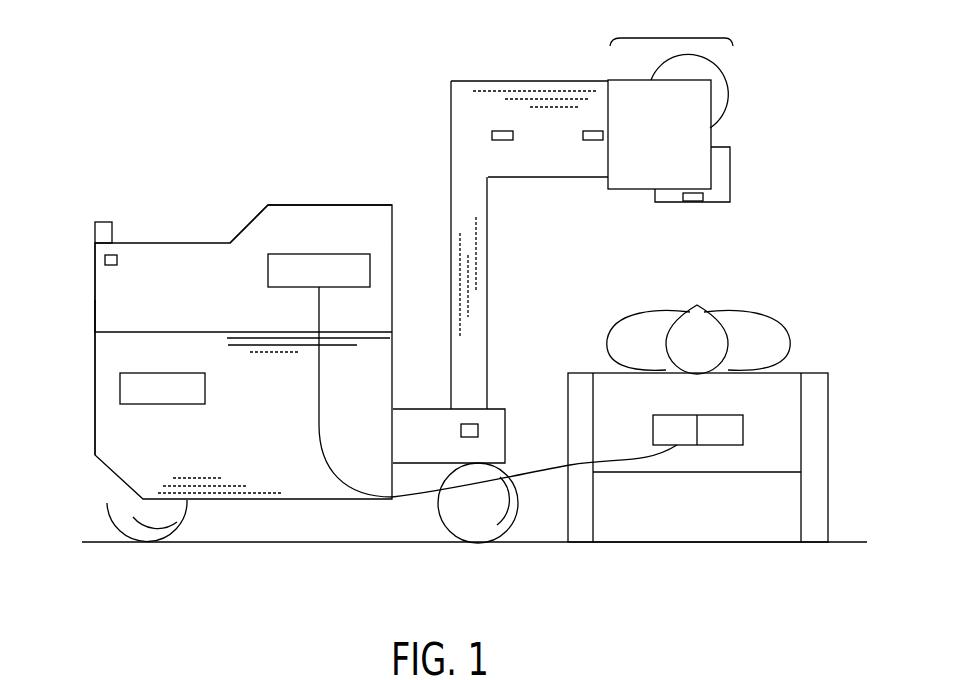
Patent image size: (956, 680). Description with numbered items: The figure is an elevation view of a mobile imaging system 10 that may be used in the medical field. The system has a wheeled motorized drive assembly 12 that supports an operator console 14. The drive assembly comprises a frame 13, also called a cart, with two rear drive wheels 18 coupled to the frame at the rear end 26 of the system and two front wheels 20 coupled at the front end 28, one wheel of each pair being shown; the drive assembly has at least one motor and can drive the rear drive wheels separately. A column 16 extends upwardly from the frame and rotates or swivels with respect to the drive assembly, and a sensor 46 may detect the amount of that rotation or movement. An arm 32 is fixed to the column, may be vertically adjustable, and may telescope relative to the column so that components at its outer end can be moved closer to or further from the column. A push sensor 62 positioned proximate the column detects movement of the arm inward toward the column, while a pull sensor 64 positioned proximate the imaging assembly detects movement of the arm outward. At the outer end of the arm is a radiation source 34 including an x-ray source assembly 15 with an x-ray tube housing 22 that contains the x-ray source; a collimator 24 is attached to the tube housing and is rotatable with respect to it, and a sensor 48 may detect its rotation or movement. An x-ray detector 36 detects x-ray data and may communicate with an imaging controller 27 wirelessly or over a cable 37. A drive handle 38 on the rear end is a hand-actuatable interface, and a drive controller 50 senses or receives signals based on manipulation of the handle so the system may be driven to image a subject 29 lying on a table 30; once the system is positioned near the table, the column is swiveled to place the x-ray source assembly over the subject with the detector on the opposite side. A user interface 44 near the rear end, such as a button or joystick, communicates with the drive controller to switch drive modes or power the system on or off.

The mobile imaging system 10 is at (108, 88).
The wheeled motorized drive assembly 12 is at (240, 502).
The frame 13 is at (95, 415).
The operator console 14 is at (252, 222).
The x-ray source assembly 15 is at (712, 133).
The column 16 is at (488, 277).
The rear drive wheels 18 is at (108, 505).
The front wheels 20 is at (478, 543).
The x-ray tube housing 22 is at (729, 90).
The collimator 24 is at (730, 185).
The rear end 26 is at (80, 353).
The imaging controller 27 is at (268, 272).
The front end 28 is at (503, 355).
The subject 29 is at (790, 340).
The table 30 is at (818, 402).
The arm 32 is at (507, 80).
The radiation source 34 is at (670, 38).
The x-ray detector 36 is at (665, 415).
The cable 37 is at (318, 399).
The drive handle 38 is at (103, 222).
The user interface 44 is at (105, 260).
The sensor 46 is at (480, 432).
The sensor 48 is at (688, 202).
The drive controller 50 is at (164, 373).
The push sensor 62 is at (503, 141).
The pull sensor 64 is at (593, 141).